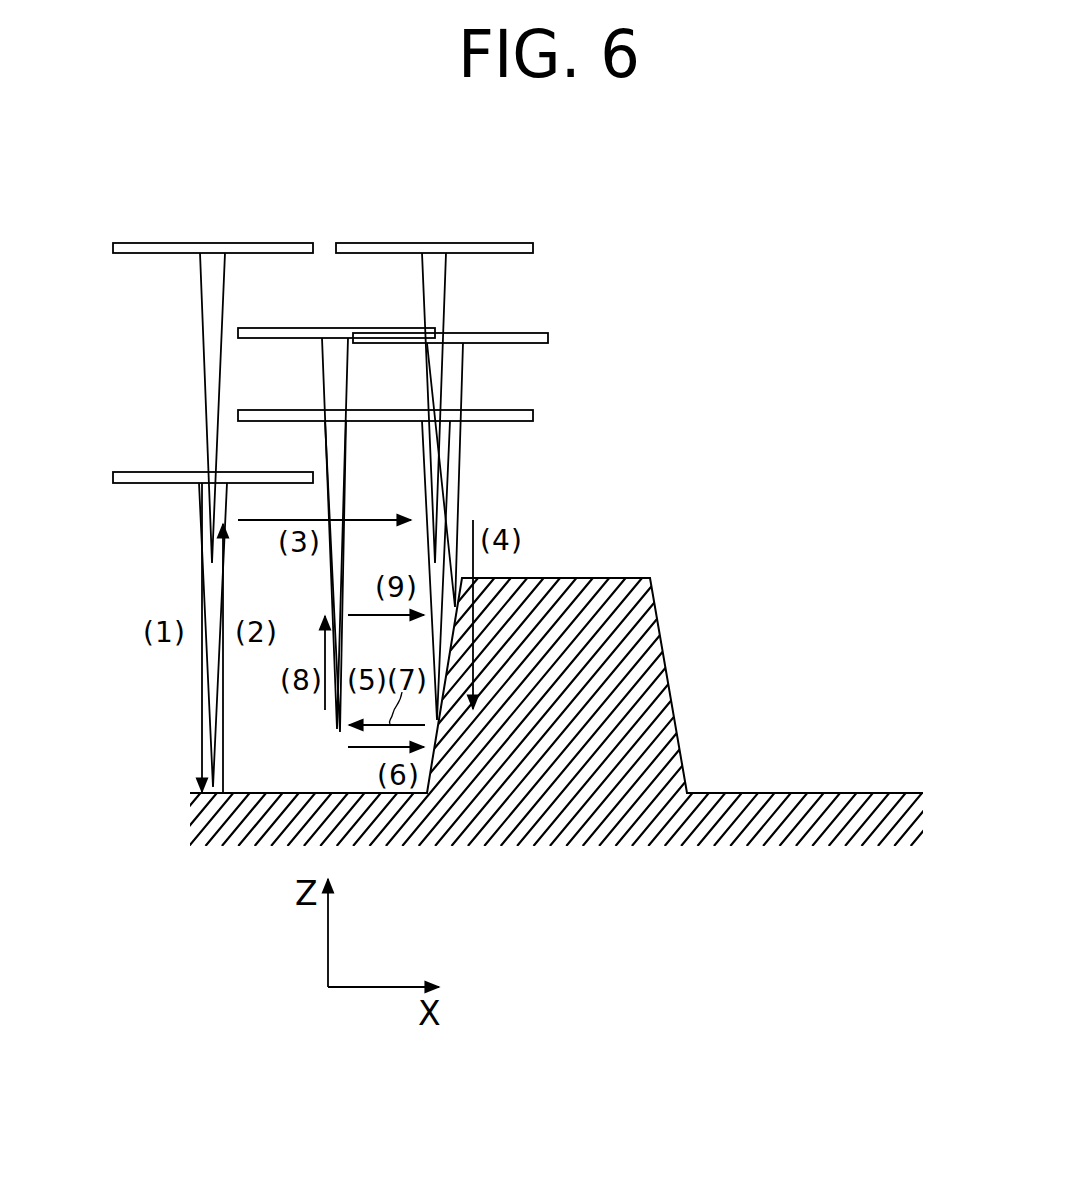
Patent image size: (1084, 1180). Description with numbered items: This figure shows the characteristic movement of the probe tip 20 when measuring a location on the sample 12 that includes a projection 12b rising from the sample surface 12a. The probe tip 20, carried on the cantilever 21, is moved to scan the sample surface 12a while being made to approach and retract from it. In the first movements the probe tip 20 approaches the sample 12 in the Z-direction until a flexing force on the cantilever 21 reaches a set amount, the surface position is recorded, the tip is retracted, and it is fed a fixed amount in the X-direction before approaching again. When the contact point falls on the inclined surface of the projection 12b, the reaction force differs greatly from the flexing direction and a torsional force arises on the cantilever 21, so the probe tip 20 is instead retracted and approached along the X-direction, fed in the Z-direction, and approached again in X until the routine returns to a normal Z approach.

The sample 12 is at (720, 685).
The sample surface 12a is at (806, 793).
The projection 12b is at (556, 578).
The probe tip 20 is at (212, 587).
The cantilever 21 is at (165, 472).